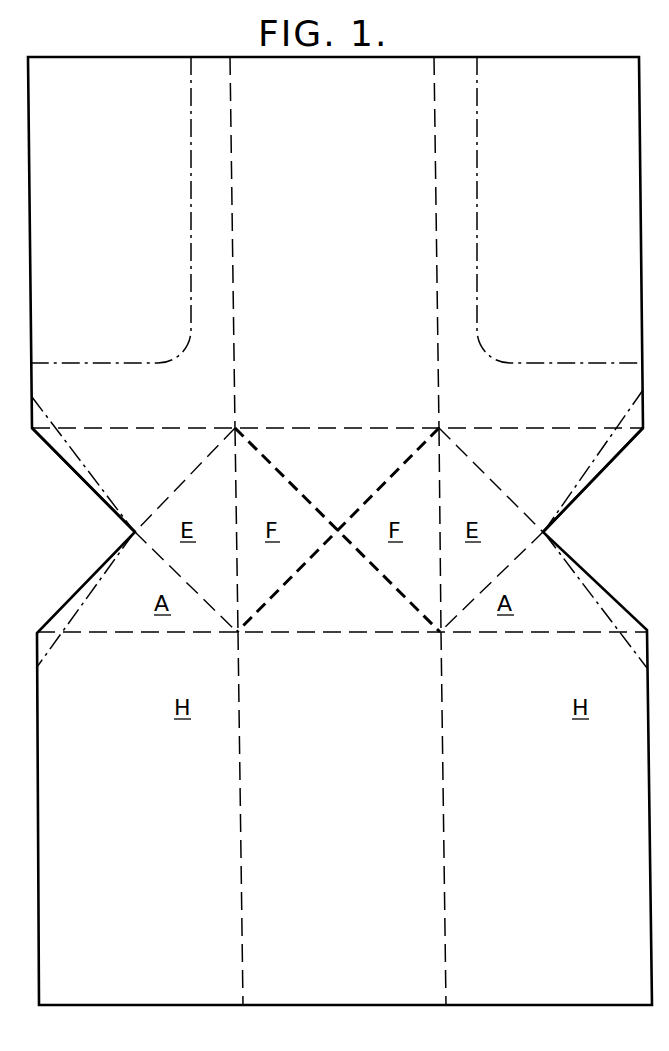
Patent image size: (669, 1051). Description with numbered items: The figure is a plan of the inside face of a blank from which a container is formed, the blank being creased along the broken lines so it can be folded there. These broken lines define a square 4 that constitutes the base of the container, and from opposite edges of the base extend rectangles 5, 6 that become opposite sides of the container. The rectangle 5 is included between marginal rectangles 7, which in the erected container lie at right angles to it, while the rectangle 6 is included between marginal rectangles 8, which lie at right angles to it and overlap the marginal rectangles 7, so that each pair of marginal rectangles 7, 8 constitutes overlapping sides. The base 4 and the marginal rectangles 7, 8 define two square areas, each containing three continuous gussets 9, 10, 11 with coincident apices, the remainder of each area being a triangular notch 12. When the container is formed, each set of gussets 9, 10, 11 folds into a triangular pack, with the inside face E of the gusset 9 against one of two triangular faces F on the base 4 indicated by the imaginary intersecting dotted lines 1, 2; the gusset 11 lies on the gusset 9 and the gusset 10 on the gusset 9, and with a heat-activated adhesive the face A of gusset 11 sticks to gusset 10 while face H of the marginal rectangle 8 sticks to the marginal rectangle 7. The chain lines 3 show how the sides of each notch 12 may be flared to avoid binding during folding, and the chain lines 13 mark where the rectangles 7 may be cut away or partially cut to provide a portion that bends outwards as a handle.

The dotted line 1 is at (284, 477).
The dotted line 2 is at (396, 472).
The chain line 3 is at (93, 473).
The square 4 is at (343, 498).
The rectangle 5 is at (367, 97).
The rectangle 6 is at (356, 983).
The marginal rectangle 7 is at (147, 97).
The marginal rectangle 8 is at (167, 985).
The gusset 9 is at (205, 580).
The gusset 10 is at (178, 455).
The gusset 11 is at (197, 618).
The triangular notch 12 is at (82, 545).
The chain line 13 is at (192, 196).